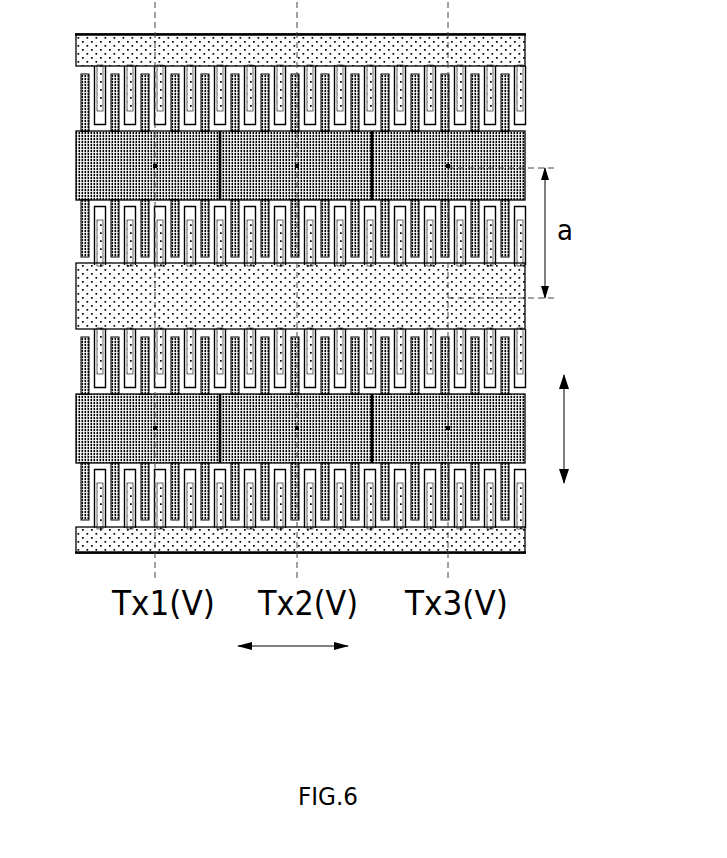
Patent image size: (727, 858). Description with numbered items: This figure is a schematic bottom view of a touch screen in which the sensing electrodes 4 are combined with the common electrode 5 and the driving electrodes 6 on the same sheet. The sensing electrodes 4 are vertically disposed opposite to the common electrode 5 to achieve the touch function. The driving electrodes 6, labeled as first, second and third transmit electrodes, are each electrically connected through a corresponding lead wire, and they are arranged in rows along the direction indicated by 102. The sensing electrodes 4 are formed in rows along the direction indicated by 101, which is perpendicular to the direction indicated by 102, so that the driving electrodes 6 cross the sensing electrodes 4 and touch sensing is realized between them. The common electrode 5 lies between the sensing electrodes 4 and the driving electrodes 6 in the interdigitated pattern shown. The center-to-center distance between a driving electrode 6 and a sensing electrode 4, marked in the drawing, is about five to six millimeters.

The sensing electrode 4 is at (85, 283).
The common electrode 5 is at (85, 332).
The driving electrode 6 is at (87, 167).
The direction 101 is at (598, 429).
The direction 102 is at (293, 668).